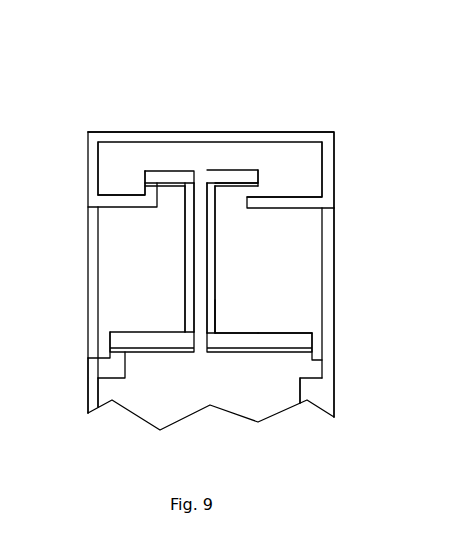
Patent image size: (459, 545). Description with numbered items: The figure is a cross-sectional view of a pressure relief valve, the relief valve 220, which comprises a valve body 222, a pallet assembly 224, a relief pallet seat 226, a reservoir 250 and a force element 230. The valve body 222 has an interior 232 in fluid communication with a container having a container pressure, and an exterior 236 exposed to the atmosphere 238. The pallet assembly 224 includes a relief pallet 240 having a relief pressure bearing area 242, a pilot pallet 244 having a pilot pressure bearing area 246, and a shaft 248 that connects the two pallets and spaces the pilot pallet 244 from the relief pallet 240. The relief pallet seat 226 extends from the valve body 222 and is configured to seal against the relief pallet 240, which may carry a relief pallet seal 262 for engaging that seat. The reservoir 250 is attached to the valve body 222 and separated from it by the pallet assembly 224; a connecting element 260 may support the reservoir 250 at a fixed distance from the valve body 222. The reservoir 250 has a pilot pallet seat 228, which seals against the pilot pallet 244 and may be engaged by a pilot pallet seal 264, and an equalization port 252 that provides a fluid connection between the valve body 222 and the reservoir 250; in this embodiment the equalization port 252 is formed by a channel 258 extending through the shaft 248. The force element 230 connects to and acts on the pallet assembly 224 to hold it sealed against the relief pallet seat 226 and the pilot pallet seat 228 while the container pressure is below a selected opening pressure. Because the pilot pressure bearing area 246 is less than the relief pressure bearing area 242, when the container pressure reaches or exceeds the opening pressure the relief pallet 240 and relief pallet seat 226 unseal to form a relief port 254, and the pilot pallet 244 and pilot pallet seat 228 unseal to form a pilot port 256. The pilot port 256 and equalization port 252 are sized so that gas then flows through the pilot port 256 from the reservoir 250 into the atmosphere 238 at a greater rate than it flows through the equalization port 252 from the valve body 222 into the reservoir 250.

The relief valve 220 is at (273, 226).
The valve body 222 is at (92, 383).
The pallet assembly 224 is at (219, 222).
The relief pallet seat 226 is at (303, 360).
The pilot pallet seat 228 is at (257, 190).
The force element 230 is at (216, 262).
The interior 232 is at (259, 407).
The exterior 236 is at (88, 398).
The atmosphere 238 is at (385, 262).
The relief pallet 240 is at (284, 333).
The relief pressure bearing area 242 is at (172, 353).
The pilot pallet 244 is at (231, 174).
The pilot pressure bearing area 246 is at (166, 168).
The shaft 248 is at (185, 298).
The reservoir 250 is at (225, 138).
The equalization port 252 is at (187, 240).
The relief port 254 is at (123, 352).
The pilot port 256 is at (144, 185).
The channel 258 is at (224, 326).
The connecting element 260 is at (90, 284).
The relief pallet seal 262 is at (316, 354).
The pilot pallet seal 264 is at (259, 183).